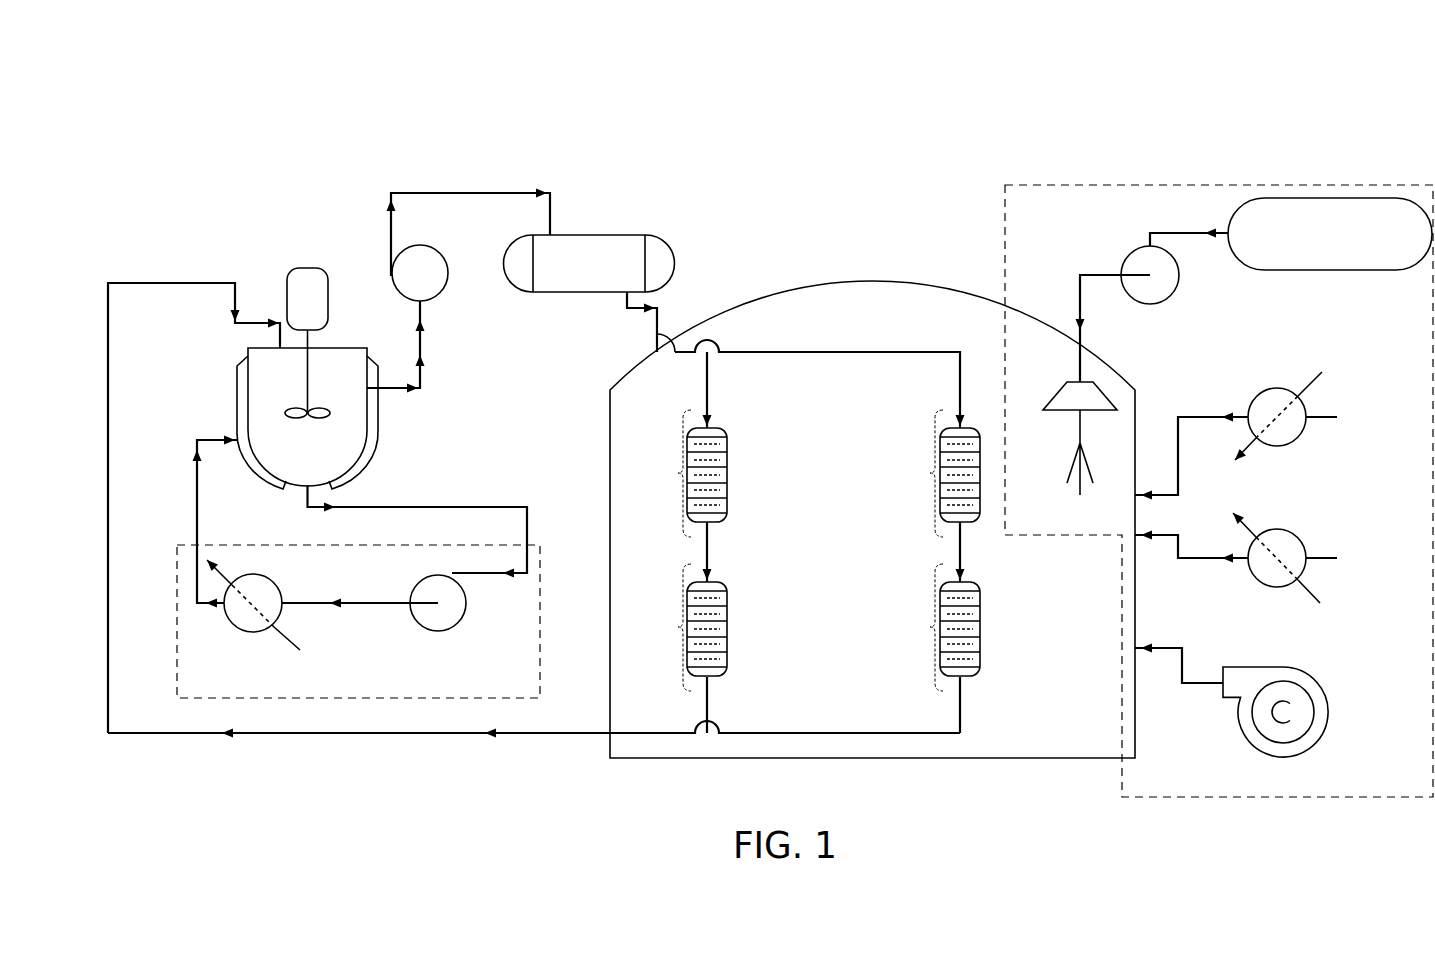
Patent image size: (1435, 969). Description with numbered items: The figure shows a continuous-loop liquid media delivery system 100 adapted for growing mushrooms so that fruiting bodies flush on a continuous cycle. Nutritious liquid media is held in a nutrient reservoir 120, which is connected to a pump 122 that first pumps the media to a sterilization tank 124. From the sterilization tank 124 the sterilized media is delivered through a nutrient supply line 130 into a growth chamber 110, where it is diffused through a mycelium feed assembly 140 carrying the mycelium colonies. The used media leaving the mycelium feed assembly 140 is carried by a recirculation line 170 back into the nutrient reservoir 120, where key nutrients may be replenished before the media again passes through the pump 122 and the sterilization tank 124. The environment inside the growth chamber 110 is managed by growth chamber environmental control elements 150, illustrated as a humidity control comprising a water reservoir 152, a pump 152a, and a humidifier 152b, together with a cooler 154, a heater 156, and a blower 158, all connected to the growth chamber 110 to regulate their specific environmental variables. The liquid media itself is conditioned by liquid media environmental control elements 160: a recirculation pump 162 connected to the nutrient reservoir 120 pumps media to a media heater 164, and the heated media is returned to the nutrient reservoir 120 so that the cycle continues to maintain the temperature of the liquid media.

The continuous-loop liquid media delivery system 100 is at (185, 105).
The growth chamber 110 is at (610, 745).
The nutrient reservoir 120 is at (237, 400).
The pump 122 is at (391, 276).
The sterilization tank 124 is at (590, 235).
The nutrient supply line 130 is at (686, 348).
The mycelium feed assembly 140 is at (680, 473).
The growth chamber environmental control elements 150 is at (1225, 185).
The water reservoir 152 is at (1345, 198).
The pump 152a is at (1146, 246).
The humidifier 152b is at (1102, 400).
The cooler 154 is at (1308, 432).
The heater 156 is at (1303, 540).
The blower 158 is at (1328, 712).
The liquid media environmental control elements 160 is at (335, 698).
The recirculation pump 162 is at (412, 590).
The media heater 164 is at (212, 613).
The recirculation line 170 is at (415, 733).